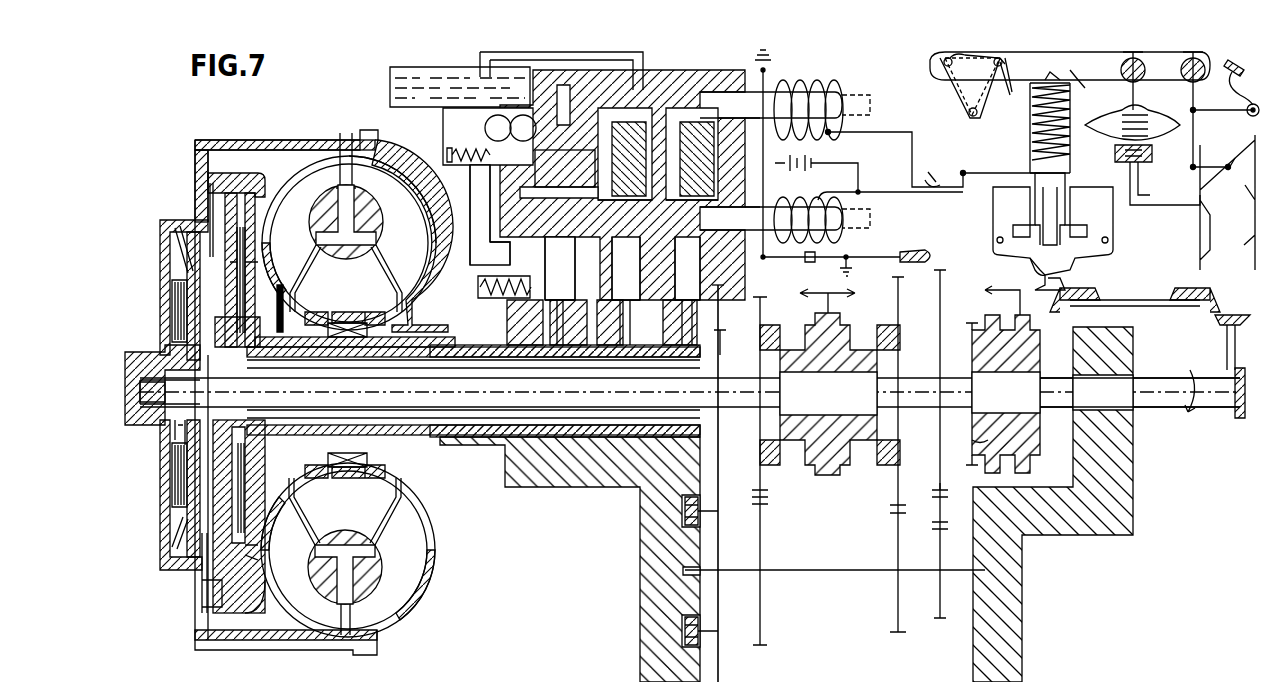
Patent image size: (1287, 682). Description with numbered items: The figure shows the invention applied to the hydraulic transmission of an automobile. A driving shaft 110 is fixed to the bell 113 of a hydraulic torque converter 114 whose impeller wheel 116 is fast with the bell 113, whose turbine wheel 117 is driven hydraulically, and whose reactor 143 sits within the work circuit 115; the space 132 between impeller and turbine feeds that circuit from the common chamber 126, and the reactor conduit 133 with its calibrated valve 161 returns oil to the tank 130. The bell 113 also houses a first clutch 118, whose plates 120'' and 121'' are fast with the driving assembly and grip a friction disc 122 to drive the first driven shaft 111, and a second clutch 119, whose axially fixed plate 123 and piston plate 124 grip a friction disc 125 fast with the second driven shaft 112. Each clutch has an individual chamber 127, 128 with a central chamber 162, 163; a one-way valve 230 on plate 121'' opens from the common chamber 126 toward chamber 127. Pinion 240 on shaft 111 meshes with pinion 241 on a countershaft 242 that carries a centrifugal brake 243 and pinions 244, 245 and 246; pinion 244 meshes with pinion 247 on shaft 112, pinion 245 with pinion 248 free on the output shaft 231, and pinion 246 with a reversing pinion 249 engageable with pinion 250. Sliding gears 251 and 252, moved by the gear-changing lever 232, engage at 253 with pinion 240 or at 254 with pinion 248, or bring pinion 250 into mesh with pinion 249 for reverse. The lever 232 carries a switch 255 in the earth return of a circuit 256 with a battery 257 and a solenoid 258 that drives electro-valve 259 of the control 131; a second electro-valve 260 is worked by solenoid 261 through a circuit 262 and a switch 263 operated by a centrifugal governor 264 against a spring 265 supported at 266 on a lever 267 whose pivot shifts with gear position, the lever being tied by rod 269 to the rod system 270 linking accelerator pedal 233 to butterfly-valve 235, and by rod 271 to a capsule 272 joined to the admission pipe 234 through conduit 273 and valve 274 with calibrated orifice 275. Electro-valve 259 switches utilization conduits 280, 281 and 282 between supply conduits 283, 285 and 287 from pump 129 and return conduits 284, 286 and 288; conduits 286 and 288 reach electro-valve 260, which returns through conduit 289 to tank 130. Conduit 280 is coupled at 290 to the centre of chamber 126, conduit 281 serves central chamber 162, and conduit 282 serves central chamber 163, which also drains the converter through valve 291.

The driving shaft 110 is at (140, 370).
The first driven shaft 111 is at (416, 396).
The second driven shaft 112 is at (550, 437).
The bell 113 is at (262, 140).
The hydraulic torque converter 114 is at (410, 172).
The work circuit 115 is at (412, 214).
The impeller wheel 116 is at (412, 251).
The turbine wheel 117 is at (303, 251).
The first clutch 118 is at (170, 296).
The second clutch 119 is at (226, 525).
The plate 120'' is at (160, 495).
The plate 121'' is at (153, 548).
The friction disc 122 is at (178, 474).
The plate 123 is at (250, 562).
The plate 124 is at (210, 580).
The friction disc 125 is at (244, 274).
The common chamber 126 is at (228, 505).
The individual chamber 127 is at (170, 267).
The individual chamber 128 is at (243, 238).
The pump 129 is at (486, 128).
The tank 130 is at (388, 70).
The control 131 is at (756, 132).
The space 132 is at (345, 150).
The reactor conduit 133 is at (490, 345).
The reactor 143 is at (361, 300).
The calibrated valve 161 is at (476, 284).
The central chamber 162 is at (182, 428).
The central chamber 163 is at (262, 360).
The one-way valve 230 is at (172, 250).
The output shaft 231 is at (1195, 376).
The gear-changing lever 232 is at (914, 254).
The accelerator pedal 233 is at (1232, 60).
The admission pipe 234 is at (1200, 261).
The butterfly-valve 235 is at (1228, 164).
The pinion 240 is at (762, 490).
The pinion 241 is at (762, 546).
The countershaft 242 is at (862, 568).
The brake 243 is at (685, 640).
The pinion 244 is at (720, 660).
The pinion 245 is at (897, 634).
The pinion 246 is at (940, 620).
The pinion 247 is at (722, 328).
The pinion 248 is at (896, 490).
The reversing pinion 249 is at (940, 483).
The pinion 250 is at (972, 455).
The sliding gear 251 is at (846, 475).
The sliding gear 252 is at (966, 350).
The teeth 253 is at (780, 318).
The teeth 254 is at (862, 328).
The electric switch 255 is at (810, 262).
The electric circuit 256 is at (862, 198).
The source of current 257 is at (812, 170).
The solenoid 258 is at (784, 196).
The electro-valve 259 is at (750, 258).
The second electro-valve 260 is at (662, 62).
The solenoid 261 is at (796, 80).
The circuit 262 is at (890, 140).
The switch 263 is at (928, 176).
The centrifugal governor 264 is at (1113, 222).
The spring 265 is at (1030, 148).
The support point 266 is at (1073, 80).
The lever 267 is at (1102, 58).
The rod 269 is at (1194, 82).
The rod system 270 is at (1252, 116).
The rod 271 is at (1136, 84).
The capsule 272 is at (1154, 122).
The conduit 273 is at (1150, 204).
The valve 274 is at (1150, 151).
The calibrated orifice 275 is at (1115, 150).
The utilization conduit 280 is at (563, 280).
The utilization conduit 281 is at (692, 284).
The utilization conduit 282 is at (640, 283).
The supply conduit 283 is at (540, 190).
The return conduit 284 is at (482, 232).
The supply conduit 285 is at (714, 195).
The return conduit 286 is at (673, 140).
The supply conduit 287 is at (648, 195).
The return conduit 288 is at (609, 140).
The conduit 289 is at (478, 56).
The coupling point 290 is at (205, 335).
The valve 291 is at (275, 490).